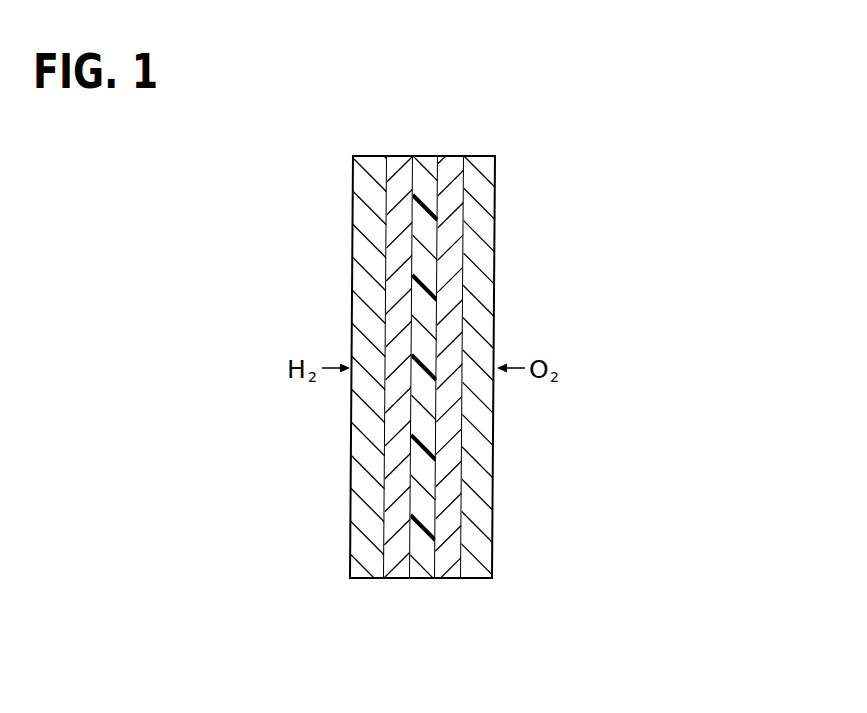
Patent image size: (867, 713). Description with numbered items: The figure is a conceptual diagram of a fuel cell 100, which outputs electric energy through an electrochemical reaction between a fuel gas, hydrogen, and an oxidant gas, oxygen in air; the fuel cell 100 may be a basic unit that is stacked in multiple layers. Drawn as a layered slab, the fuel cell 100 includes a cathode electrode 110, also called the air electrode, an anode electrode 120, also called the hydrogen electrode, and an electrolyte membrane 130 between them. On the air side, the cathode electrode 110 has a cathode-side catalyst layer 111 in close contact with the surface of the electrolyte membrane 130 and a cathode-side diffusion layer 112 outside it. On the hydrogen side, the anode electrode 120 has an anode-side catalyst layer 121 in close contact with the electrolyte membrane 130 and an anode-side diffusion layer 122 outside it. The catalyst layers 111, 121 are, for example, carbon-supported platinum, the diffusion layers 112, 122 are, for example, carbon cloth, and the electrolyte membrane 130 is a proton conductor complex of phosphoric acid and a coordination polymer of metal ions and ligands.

The fuel cell 100 is at (481, 150).
The cathode electrode 110 is at (501, 423).
The cathode-side catalyst layer 111 is at (447, 579).
The cathode-side diffusion layer 112 is at (477, 579).
The anode electrode 120 is at (360, 417).
The anode-side catalyst layer 121 is at (398, 579).
The anode-side diffusion layer 122 is at (368, 579).
The electrolyte membrane 130 is at (423, 156).